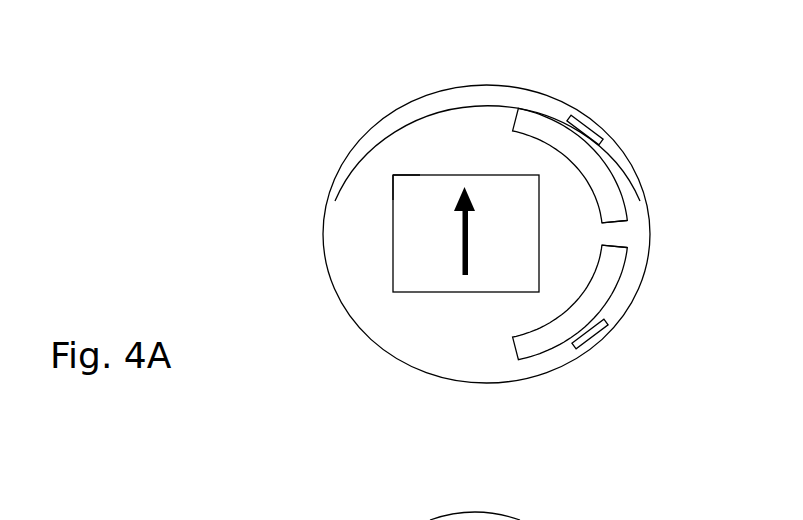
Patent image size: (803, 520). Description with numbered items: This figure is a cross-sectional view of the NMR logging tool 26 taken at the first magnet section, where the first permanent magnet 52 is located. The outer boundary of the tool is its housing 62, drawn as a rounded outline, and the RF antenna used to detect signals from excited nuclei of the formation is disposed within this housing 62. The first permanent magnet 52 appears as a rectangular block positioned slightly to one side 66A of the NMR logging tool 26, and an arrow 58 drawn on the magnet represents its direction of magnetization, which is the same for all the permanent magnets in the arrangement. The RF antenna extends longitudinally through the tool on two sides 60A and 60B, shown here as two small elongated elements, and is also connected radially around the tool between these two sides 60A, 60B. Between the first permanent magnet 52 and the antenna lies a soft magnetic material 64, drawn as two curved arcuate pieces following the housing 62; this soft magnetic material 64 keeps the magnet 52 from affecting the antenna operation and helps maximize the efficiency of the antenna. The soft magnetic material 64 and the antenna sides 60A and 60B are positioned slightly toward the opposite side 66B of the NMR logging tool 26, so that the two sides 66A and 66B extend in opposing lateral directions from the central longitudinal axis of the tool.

The NMR logging tool 26 is at (378, 83).
The housing 62 is at (487, 85).
The first permanent magnet 52 is at (393, 243).
The arrow 58 is at (462, 263).
The soft magnetic material 64 is at (610, 172).
The first side of RF antenna 60A is at (598, 334).
The second side of RF antenna 60B is at (592, 128).
The one side of NMR tool 66A is at (380, 176).
The opposite side of NMR tool 66B is at (634, 233).